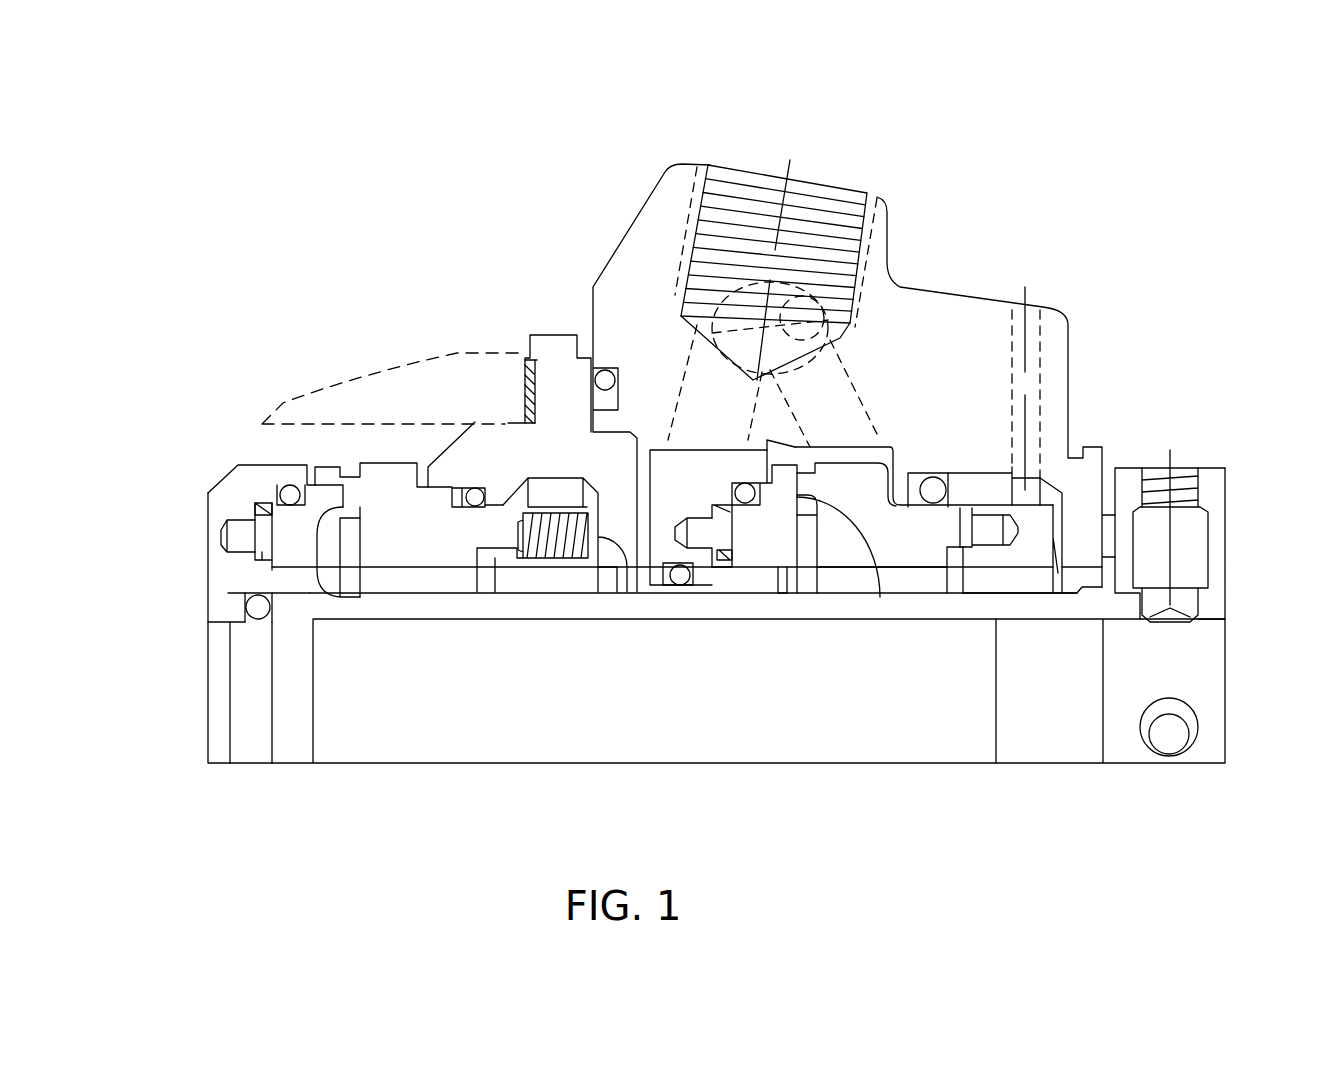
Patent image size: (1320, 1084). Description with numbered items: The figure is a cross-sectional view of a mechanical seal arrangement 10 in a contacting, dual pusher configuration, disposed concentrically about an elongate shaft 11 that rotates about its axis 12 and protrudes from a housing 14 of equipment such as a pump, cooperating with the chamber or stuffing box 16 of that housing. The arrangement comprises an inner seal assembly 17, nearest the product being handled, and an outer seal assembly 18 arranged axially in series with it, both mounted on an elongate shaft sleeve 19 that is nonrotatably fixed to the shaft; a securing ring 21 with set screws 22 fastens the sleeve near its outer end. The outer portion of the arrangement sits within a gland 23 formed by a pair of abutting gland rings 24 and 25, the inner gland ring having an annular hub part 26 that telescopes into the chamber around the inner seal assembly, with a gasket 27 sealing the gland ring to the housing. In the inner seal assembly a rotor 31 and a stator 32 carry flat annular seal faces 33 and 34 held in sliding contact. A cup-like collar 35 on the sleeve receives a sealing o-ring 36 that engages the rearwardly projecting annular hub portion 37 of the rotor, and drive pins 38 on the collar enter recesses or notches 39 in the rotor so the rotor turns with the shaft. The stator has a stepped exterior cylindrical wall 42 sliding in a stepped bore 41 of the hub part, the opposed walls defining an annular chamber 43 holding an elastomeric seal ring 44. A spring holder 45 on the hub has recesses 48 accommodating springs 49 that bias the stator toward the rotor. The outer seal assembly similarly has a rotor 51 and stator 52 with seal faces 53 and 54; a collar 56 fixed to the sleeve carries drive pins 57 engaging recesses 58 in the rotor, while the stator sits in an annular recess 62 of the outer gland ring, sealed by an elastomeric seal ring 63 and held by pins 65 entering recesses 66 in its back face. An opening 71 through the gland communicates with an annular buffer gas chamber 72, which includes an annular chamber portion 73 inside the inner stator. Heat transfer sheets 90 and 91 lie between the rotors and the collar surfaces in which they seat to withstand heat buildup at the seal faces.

The mechanical seal arrangement 10 is at (1213, 256).
The shaft 11 is at (518, 715).
The axis 12 is at (370, 733).
The housing 14 is at (368, 395).
The chamber or stuffing box 16 is at (233, 437).
The inner seal assembly 17 is at (328, 427).
The outer seal assembly 18 is at (937, 695).
The shaft sleeve 19 is at (271, 567).
The securing ring 21 is at (1220, 495).
The set screws 22 is at (1180, 492).
The gland 23 is at (673, 175).
The gland ring 24 is at (884, 240).
The gland ring 25 is at (554, 335).
The annular hub part 26 is at (506, 433).
The gasket 27 is at (528, 357).
The rotating seal ring (rotor) 31 is at (255, 505).
The stationary seal ring (stator) 32 is at (388, 475).
The seal face 33 is at (335, 470).
The seal face 34 is at (318, 555).
The collar 35 is at (292, 476).
The sealing o-ring 36 is at (277, 491).
The annular hub portion 37 is at (221, 531).
The drive pins 38 is at (253, 552).
The recesses or notches 39 is at (264, 560).
The stepped bore 41 is at (466, 508).
The stepped exterior cylindrical wall 42 is at (449, 450).
The annular chamber 43 is at (458, 488).
The elastomeric seal ring 44 is at (473, 488).
The spring holder 45 is at (580, 595).
The recesses 48 is at (542, 560).
The springs 49 is at (617, 592).
The rotating seal ring (rotor) 51 is at (801, 500).
The stationary seal ring (stator) 52 is at (900, 500).
The seal face 53 is at (862, 567).
The seal face 54 is at (825, 520).
The collar 56 is at (703, 575).
The drive pins 57 is at (707, 535).
The recesses 58 is at (762, 542).
The annular recess 62 is at (937, 488).
The elastomeric seal ring 63 is at (975, 515).
The pins 65 is at (985, 498).
The recesses 66 is at (975, 560).
The opening 71 is at (762, 195).
The annular chamber 72 is at (712, 505).
The annular chamber portion 73 is at (413, 598).
The heat transfer sheet 90 is at (262, 570).
The heat transfer sheet 91 is at (660, 448).